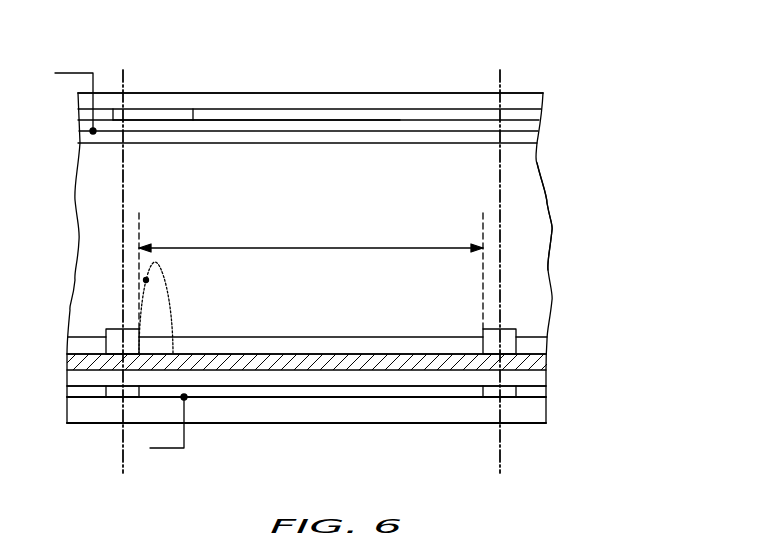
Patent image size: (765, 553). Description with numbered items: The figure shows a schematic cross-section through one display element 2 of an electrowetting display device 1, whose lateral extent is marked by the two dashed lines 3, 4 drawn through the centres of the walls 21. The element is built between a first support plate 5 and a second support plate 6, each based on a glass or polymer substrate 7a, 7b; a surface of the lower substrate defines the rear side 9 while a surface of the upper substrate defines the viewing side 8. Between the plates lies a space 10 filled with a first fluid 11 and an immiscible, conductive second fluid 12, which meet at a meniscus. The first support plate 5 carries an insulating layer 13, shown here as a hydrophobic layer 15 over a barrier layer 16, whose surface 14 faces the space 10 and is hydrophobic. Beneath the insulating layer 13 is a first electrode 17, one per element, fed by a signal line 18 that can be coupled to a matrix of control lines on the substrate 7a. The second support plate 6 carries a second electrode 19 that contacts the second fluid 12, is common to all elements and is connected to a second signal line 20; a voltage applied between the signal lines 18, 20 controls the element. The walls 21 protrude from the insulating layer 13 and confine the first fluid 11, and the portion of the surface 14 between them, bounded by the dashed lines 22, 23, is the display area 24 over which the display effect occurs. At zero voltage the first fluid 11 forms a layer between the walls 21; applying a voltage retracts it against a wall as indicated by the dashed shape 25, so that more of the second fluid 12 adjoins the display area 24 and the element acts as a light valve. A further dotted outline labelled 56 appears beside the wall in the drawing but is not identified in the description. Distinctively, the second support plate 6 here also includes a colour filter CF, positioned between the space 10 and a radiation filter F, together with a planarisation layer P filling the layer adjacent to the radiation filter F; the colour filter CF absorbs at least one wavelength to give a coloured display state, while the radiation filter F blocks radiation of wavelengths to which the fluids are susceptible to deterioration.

The electrowetting display device 1 is at (598, 63).
The display element 2 is at (293, 54).
The dashed line 3 is at (122, 78).
The dashed line 4 is at (500, 78).
The first support plate 5 is at (606, 337).
The second support plate 6 is at (562, 93).
The substrate 7a is at (527, 415).
The substrate 7b is at (446, 102).
The viewing side 8 is at (212, 92).
The rear side 9 is at (272, 425).
The space 10 is at (378, 157).
The first fluid 11 is at (447, 343).
The second fluid 12 is at (547, 224).
The insulating layer 13 is at (556, 354).
The surface 14 is at (352, 353).
The hydrophobic layer 15 is at (307, 363).
The barrier layer 16 is at (258, 375).
The first electrode 17 is at (378, 388).
The signal line 18 is at (167, 450).
The second electrode 19 is at (111, 138).
The second signal line 20 is at (75, 73).
The walls 21 is at (113, 348).
The dashed line 22 is at (483, 220).
The dashed line 23 is at (141, 218).
The display area 24 is at (311, 238).
The dashed shape 25 is at (146, 280).
The light distribution 56 is at (173, 303).
The radiation filter F is at (155, 115).
The planarisation layer P is at (243, 115).
The colour filter CF is at (303, 123).